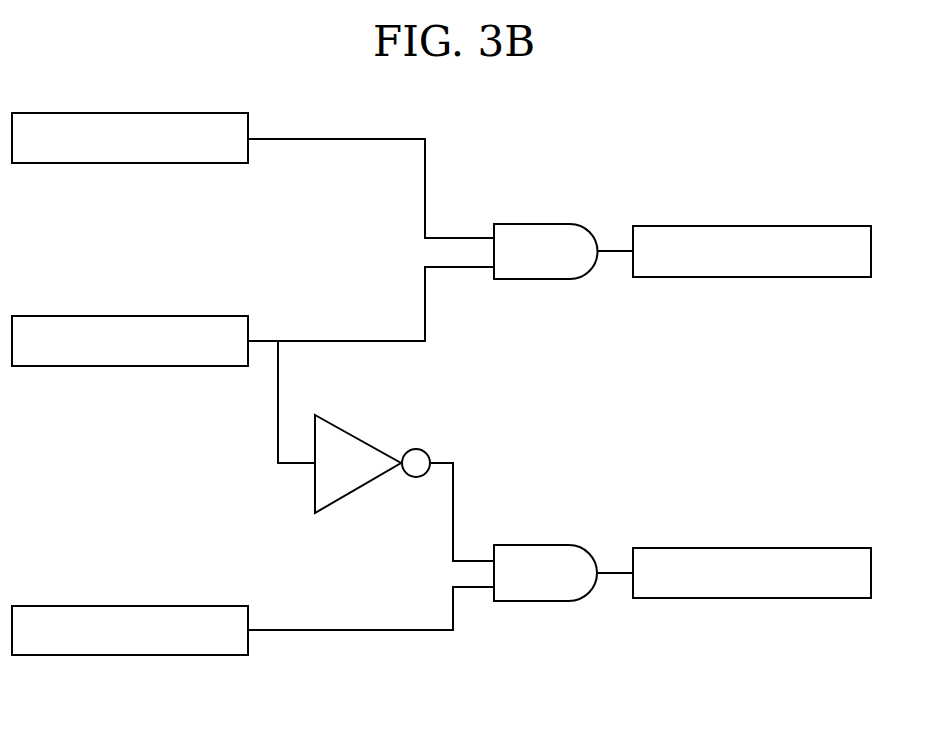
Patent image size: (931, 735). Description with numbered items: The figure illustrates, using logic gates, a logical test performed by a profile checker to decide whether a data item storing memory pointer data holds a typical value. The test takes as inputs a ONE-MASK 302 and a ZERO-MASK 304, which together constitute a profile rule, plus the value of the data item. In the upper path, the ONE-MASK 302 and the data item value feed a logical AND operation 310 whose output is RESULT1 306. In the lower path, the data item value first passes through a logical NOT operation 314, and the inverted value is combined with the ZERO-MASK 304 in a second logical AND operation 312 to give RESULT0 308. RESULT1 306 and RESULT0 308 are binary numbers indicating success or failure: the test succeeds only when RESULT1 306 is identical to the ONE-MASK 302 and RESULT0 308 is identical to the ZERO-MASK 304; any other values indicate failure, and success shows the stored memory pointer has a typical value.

The ONE-MASK 302 is at (130, 239).
The ZERO-MASK 304 is at (130, 630).
The RESULT1 306 is at (720, 278).
The RESULT0 308 is at (722, 600).
The logical AND operation 310 is at (532, 281).
The logical AND operation 312 is at (533, 602).
The logical NOT operation 314 is at (314, 487).